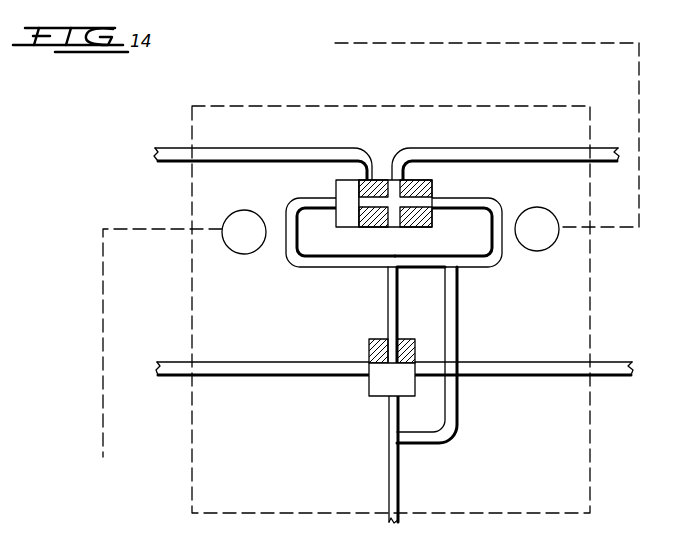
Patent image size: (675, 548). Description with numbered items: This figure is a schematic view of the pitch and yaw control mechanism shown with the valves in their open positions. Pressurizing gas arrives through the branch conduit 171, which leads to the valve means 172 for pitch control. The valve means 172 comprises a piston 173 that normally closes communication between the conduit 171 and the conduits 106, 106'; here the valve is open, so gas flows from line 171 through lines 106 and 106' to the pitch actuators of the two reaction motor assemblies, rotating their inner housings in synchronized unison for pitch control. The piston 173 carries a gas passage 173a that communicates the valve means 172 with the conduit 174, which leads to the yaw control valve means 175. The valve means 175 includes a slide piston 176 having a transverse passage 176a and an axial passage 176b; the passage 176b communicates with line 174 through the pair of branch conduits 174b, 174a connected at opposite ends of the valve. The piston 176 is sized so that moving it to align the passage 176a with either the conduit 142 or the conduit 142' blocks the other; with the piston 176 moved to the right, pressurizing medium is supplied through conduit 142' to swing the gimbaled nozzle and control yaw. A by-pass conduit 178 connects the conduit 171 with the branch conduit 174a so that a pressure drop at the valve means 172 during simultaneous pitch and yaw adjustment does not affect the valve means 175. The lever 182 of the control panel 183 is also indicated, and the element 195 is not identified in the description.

The conduit 106 is at (262, 347).
The conduit 106' is at (524, 347).
The conduit 142 is at (263, 150).
The conduit 142' is at (505, 150).
The branch conduit 171 is at (389, 462).
The valve means 172 is at (414, 332).
The piston 173 is at (372, 346).
The gas passage 173a is at (387, 358).
The conduit 174 is at (387, 303).
The branch conduit 174a is at (495, 247).
The branch conduit 174b is at (303, 264).
The yaw control valve means 175 is at (327, 188).
The piston 176 is at (433, 195).
The transverse passage 176a is at (393, 218).
The axial passage 176b is at (376, 202).
The by-pass conduit 178 is at (452, 424).
The lever 182 is at (244, 236).
The control panel 183 is at (190, 268).
The hole 195 is at (543, 215).